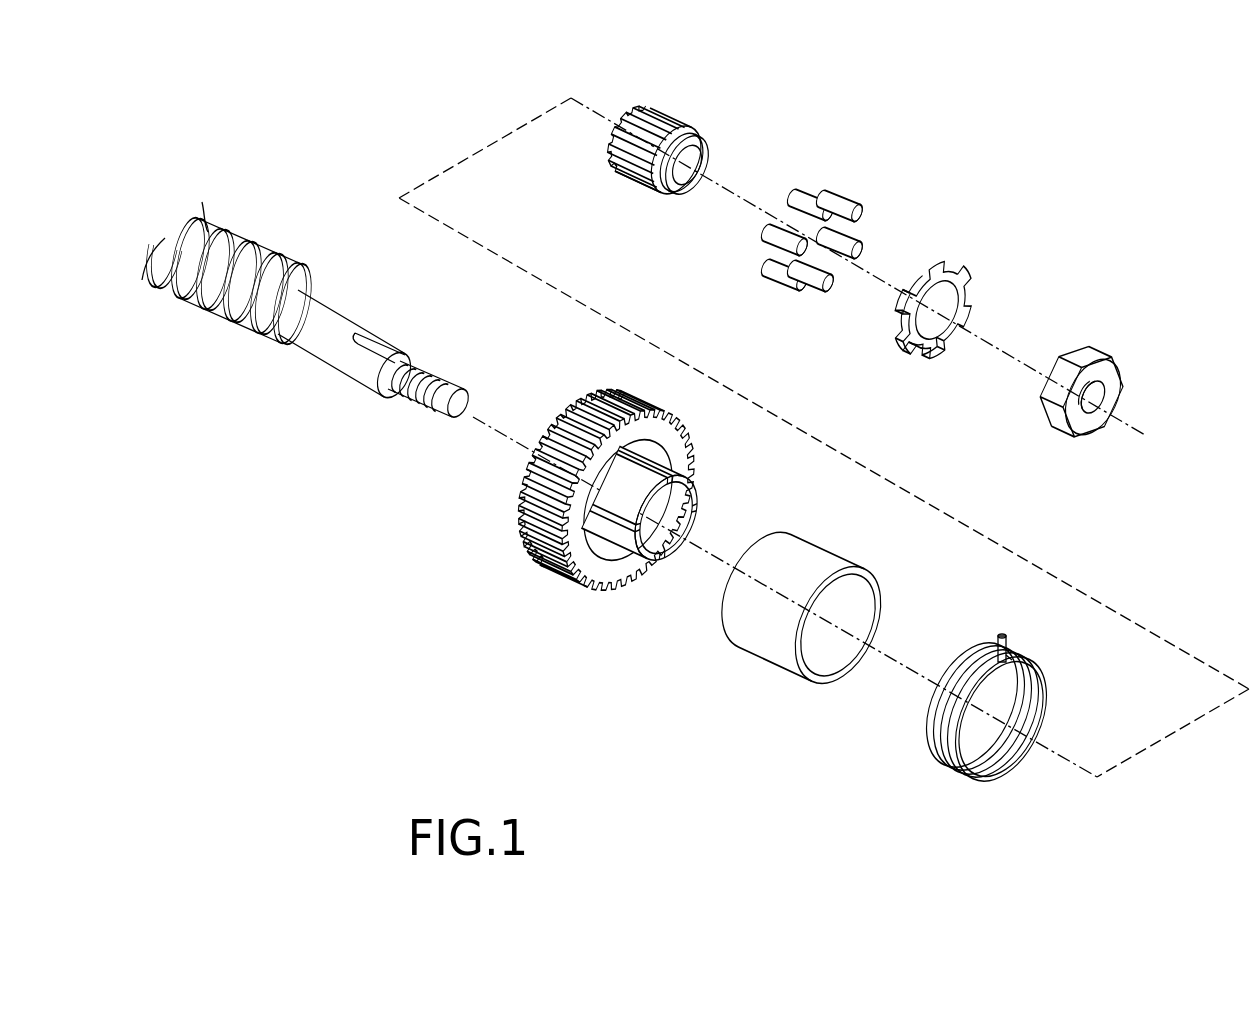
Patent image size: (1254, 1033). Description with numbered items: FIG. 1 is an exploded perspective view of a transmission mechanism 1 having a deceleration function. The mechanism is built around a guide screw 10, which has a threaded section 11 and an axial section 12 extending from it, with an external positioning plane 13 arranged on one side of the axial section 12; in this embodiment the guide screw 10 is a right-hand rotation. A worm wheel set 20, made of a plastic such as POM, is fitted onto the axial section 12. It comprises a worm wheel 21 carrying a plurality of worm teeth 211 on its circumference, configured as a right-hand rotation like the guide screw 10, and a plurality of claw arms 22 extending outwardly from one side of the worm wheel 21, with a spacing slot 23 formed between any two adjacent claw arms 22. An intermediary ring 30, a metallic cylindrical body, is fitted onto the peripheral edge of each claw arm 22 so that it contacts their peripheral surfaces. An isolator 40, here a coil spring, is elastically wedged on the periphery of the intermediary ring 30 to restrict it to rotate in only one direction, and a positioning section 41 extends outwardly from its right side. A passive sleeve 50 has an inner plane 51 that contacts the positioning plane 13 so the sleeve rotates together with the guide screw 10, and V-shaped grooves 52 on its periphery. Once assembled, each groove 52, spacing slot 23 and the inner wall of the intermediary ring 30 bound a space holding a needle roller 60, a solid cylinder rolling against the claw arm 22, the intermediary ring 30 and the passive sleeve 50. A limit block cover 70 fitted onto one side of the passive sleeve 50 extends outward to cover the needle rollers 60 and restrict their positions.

The transmission mechanism 1 is at (1068, 102).
The guide screw 10 is at (306, 309).
The threaded section 11 is at (257, 273).
The axial section 12 is at (327, 316).
The positioning plane 13 is at (390, 350).
The worm wheel set 20 is at (615, 515).
The worm wheel 21 is at (606, 489).
The worm teeth 211 is at (606, 489).
The claw arm 22 is at (646, 508).
The spacing slot 23 is at (588, 582).
The intermediary ring 30 is at (758, 633).
The isolator 40 is at (944, 689).
The positioning section 41 is at (1001, 635).
The passive sleeve 50 is at (702, 116).
The inner plane 51 is at (663, 117).
The groove 52 is at (654, 150).
The needle roller 60 is at (859, 192).
The limit block cover 70 is at (975, 264).